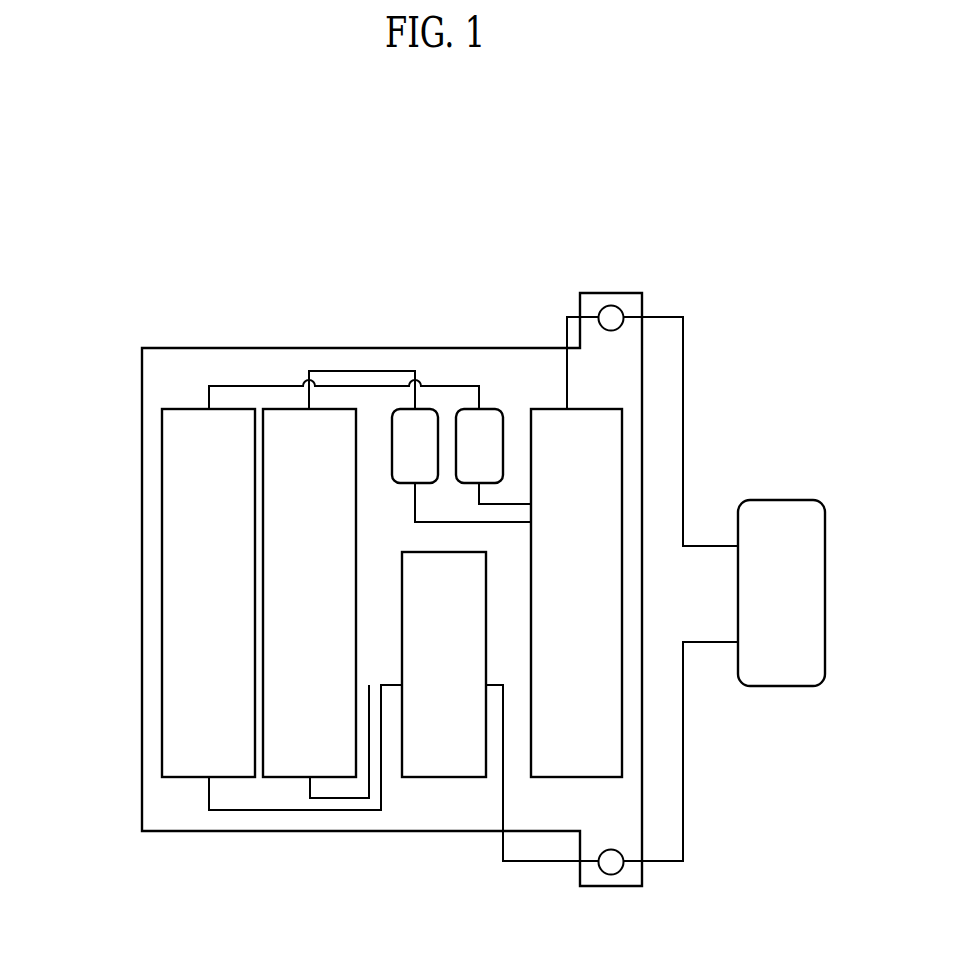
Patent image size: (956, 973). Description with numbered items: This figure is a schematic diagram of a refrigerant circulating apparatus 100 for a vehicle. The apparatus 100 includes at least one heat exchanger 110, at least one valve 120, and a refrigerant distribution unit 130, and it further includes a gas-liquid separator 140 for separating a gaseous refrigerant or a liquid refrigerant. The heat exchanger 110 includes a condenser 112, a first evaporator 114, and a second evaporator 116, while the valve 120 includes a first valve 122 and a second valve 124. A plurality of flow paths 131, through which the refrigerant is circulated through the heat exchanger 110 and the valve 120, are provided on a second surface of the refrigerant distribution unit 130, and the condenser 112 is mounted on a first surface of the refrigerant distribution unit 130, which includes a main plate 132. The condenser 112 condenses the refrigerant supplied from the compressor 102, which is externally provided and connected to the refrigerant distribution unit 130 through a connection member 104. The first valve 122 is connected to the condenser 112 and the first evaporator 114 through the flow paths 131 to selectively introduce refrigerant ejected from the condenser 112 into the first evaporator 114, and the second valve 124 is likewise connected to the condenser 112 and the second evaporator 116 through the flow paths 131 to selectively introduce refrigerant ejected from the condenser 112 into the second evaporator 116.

The refrigerant circulating apparatus 100 is at (406, 180).
The compressor 102 is at (782, 500).
The connection member 104 is at (683, 383).
The heat exchanger 110 is at (786, 183).
The condenser 112 is at (622, 591).
The first evaporator 114 is at (282, 408).
The second evaporator 116 is at (182, 408).
The valve 120 is at (786, 292).
The first valve 122 is at (403, 408).
The second valve 124 is at (488, 408).
The refrigerant distribution unit 130 is at (127, 527).
The flow paths 131 is at (405, 405).
The main plate 132 is at (142, 386).
The gas-liquid separator 140 is at (443, 778).